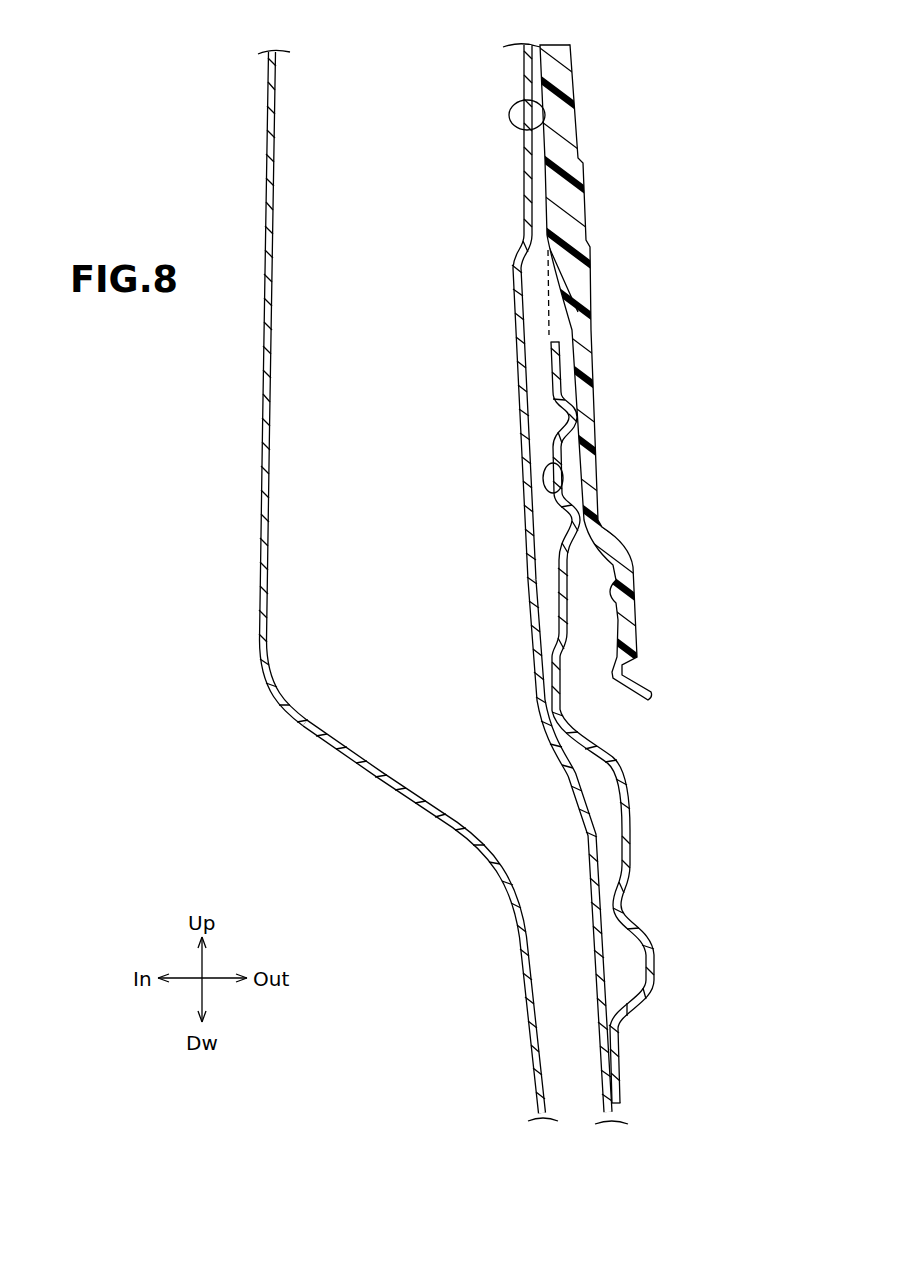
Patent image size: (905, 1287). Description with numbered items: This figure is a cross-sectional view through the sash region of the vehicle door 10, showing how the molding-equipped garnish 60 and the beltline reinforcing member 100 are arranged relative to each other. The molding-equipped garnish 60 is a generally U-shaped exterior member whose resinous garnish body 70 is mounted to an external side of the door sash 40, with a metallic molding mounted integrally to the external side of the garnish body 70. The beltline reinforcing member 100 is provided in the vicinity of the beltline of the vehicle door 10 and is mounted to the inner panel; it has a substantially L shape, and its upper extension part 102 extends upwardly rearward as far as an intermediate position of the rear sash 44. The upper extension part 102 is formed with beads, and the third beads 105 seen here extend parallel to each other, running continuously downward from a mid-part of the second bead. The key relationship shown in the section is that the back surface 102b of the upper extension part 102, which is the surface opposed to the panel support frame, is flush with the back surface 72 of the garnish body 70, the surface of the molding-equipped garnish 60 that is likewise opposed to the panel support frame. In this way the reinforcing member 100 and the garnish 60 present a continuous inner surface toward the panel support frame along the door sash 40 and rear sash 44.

The vehicle door 10 is at (136, 127).
The door sash 40 is at (261, 656).
The rear sash 44 is at (378, 776).
The molding-equipped garnish 60 is at (622, 363).
The garnish body 70 is at (592, 297).
The back surface of garnish body 72 is at (545, 103).
The beltline reinforcing member 100 is at (654, 967).
The upper extension part 102 is at (565, 578).
The back surface of upper extension part 102b is at (562, 463).
The third bead 105 is at (578, 403).